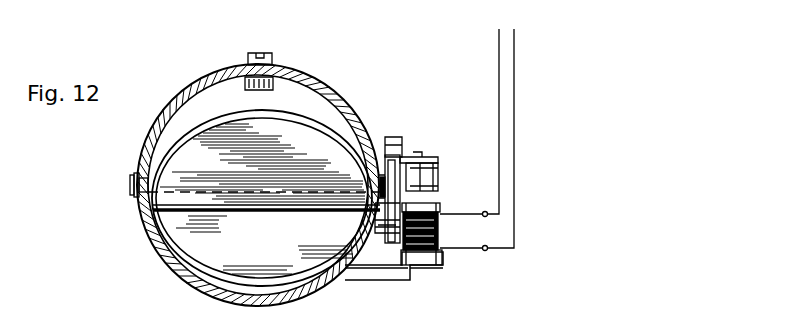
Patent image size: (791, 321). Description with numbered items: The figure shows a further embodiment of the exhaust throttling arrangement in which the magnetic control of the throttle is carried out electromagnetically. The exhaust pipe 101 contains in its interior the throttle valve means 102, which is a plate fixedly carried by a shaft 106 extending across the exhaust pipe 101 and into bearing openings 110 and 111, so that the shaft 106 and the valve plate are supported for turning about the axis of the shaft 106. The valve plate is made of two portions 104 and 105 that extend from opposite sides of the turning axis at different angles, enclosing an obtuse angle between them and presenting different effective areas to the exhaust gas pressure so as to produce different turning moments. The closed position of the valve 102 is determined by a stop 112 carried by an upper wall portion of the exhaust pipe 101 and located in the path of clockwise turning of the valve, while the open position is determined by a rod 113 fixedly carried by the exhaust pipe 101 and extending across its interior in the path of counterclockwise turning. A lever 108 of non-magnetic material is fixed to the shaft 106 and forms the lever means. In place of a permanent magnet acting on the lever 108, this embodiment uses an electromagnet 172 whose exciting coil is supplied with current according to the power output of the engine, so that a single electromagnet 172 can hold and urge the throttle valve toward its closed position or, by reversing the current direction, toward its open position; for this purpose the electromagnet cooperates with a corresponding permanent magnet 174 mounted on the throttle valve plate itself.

The exhaust pipe 101 is at (217, 78).
The stop 112 is at (287, 63).
The throttle valve means 102 is at (318, 109).
The throttle valve plate portion 104 is at (217, 147).
The throttle valve plate portion 105 is at (198, 245).
The rod 113 is at (250, 214).
The bearing opening 111 is at (141, 167).
The shaft 106 is at (130, 183).
The bearing opening 110 is at (379, 144).
The lever 108 is at (402, 138).
The permanent magnet 174 is at (437, 176).
The electromagnet 172 is at (442, 231).